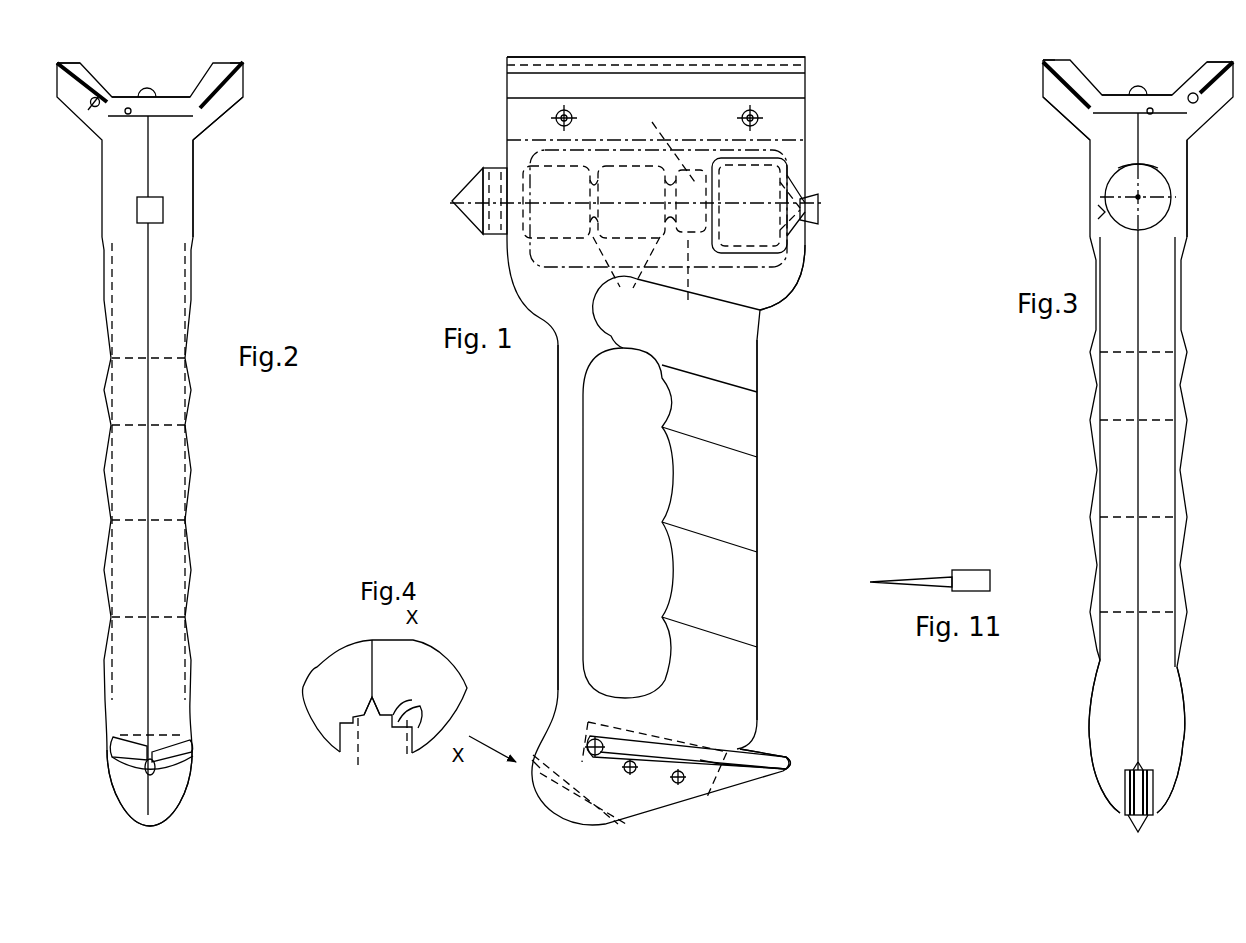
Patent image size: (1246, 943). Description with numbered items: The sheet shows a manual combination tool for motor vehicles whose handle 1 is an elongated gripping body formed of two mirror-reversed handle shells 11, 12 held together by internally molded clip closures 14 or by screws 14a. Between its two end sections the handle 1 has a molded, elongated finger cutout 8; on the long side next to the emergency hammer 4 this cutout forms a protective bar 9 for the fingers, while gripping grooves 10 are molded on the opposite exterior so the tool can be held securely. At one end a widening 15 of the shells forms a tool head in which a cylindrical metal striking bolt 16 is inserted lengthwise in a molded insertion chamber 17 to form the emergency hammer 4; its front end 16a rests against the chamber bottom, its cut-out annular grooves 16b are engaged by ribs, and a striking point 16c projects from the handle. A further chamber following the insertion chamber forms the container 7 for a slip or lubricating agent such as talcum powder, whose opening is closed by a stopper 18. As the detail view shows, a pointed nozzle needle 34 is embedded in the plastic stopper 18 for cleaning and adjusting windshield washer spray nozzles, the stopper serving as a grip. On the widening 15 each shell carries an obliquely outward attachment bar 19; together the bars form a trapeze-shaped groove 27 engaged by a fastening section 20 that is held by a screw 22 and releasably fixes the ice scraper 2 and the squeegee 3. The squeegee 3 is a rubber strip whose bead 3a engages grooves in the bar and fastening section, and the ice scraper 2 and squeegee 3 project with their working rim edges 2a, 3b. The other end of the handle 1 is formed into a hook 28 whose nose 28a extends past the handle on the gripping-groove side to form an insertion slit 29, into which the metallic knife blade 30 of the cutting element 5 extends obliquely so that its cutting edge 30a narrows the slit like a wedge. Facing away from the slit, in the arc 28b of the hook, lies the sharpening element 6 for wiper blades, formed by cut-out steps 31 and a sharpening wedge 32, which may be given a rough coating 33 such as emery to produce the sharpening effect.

In FIG. 2, the handle 1 is at (168, 400).
In FIG. 1, the handle 1 is at (732, 486).
In FIG. 3, the handle 1 is at (1153, 372).
In FIG. 2, the ice scraper 2 is at (236, 104).
In FIG. 3, the ice scraper 2 is at (1058, 88).
In FIG. 2, the working rim edge 2a is at (247, 62).
In FIG. 3, the working rim edge 2a is at (1041, 62).
In FIG. 2, the squeegee 3 is at (64, 98).
In FIG. 1, the squeegee 3 is at (806, 60).
In FIG. 3, the squeegee 3 is at (1210, 99).
In FIG. 2, the bead 3a is at (92, 107).
In FIG. 2, the working rim edge 3b is at (60, 63).
In FIG. 3, the working rim edge 3b is at (1235, 62).
In FIG. 1, the emergency hammer 4 is at (562, 217).
In FIG. 3, the emergency hammer 4 is at (1102, 212).
In FIG. 2, the cutting element 5 is at (182, 749).
In FIG. 1, the cutting element 5 is at (753, 744).
In FIG. 1, the sharpening element 6 is at (525, 784).
In FIG. 4, the sharpening element 6 is at (383, 731).
In FIG. 3, the sharpening element 6 is at (1163, 799).
In FIG. 1, the container 7 is at (766, 185).
In FIG. 1, the finger cutout 8 is at (615, 449).
In FIG. 1, the protective bar 9 is at (572, 409).
In FIG. 2, the gripping grooves 10 is at (197, 557).
In FIG. 1, the gripping grooves 10 is at (729, 417).
In FIG. 3, the gripping grooves 10 is at (1092, 450).
In FIG. 2, the handle shell 11 is at (197, 266).
In FIG. 4, the handle shell 11 is at (313, 687).
In FIG. 3, the handle shell 11 is at (1117, 268).
In FIG. 2, the handle shell 12 is at (102, 257).
In FIG. 1, the handle shell 12 is at (760, 663).
In FIG. 4, the handle shell 12 is at (410, 652).
In FIG. 3, the handle shell 12 is at (1158, 264).
In FIG. 1, the clip closures 14 is at (677, 784).
In FIG. 1, the screws 14a is at (741, 118).
In FIG. 2, the widening 15 is at (186, 177).
In FIG. 1, the widening 15 is at (784, 268).
In FIG. 3, the widening 15 is at (1178, 175).
In FIG. 1, the striking bolt 16 is at (500, 232).
In FIG. 3, the striking bolt 16 is at (1122, 185).
In FIG. 1, the front end 16a is at (658, 146).
In FIG. 1, the annular grooves 16b is at (676, 292).
In FIG. 1, the striking point 16c is at (474, 191).
In FIG. 1, the insertion chamber 17 is at (682, 281).
In FIG. 3, the insertion chamber 17 is at (1125, 172).
In FIG. 2, the stopper 18 is at (154, 210).
In FIG. 1, the stopper 18 is at (820, 206).
In FIG. 11, the stopper 18 is at (973, 582).
In FIG. 2, the attachment bar 19 is at (206, 113).
In FIG. 1, the attachment bar 19 is at (530, 88).
In FIG. 3, the attachment bar 19 is at (1073, 108).
In FIG. 2, the fastening section 20 is at (174, 100).
In FIG. 3, the fastening section 20 is at (1090, 90).
In FIG. 2, the screw 22 is at (143, 91).
In FIG. 3, the screw 22 is at (1131, 89).
In FIG. 2, the trapeze-shaped groove 27 is at (129, 115).
In FIG. 3, the trapeze-shaped groove 27 is at (1151, 114).
In FIG. 2, the hook 28 is at (173, 786).
In FIG. 1, the hook 28 is at (694, 800).
In FIG. 3, the hook 28 is at (1113, 773).
In FIG. 1, the nose 28a is at (761, 775).
In FIG. 1, the arc 28b is at (560, 803).
In FIG. 2, the insertion slit 29 is at (120, 750).
In FIG. 1, the insertion slit 29 is at (717, 752).
In FIG. 2, the knife blade 30 is at (138, 744).
In FIG. 1, the knife blade 30 is at (706, 786).
In FIG. 1, the cutting edge 30a is at (673, 745).
In FIG. 4, the steps 31 is at (394, 714).
In FIG. 3, the steps 31 is at (1138, 837).
In FIG. 4, the sharpening wedge 32 is at (368, 695).
In FIG. 3, the sharpening wedge 32 is at (1138, 762).
In FIG. 4, the rough coating 33 is at (376, 753).
In FIG. 11, the nozzle needle 34 is at (915, 578).